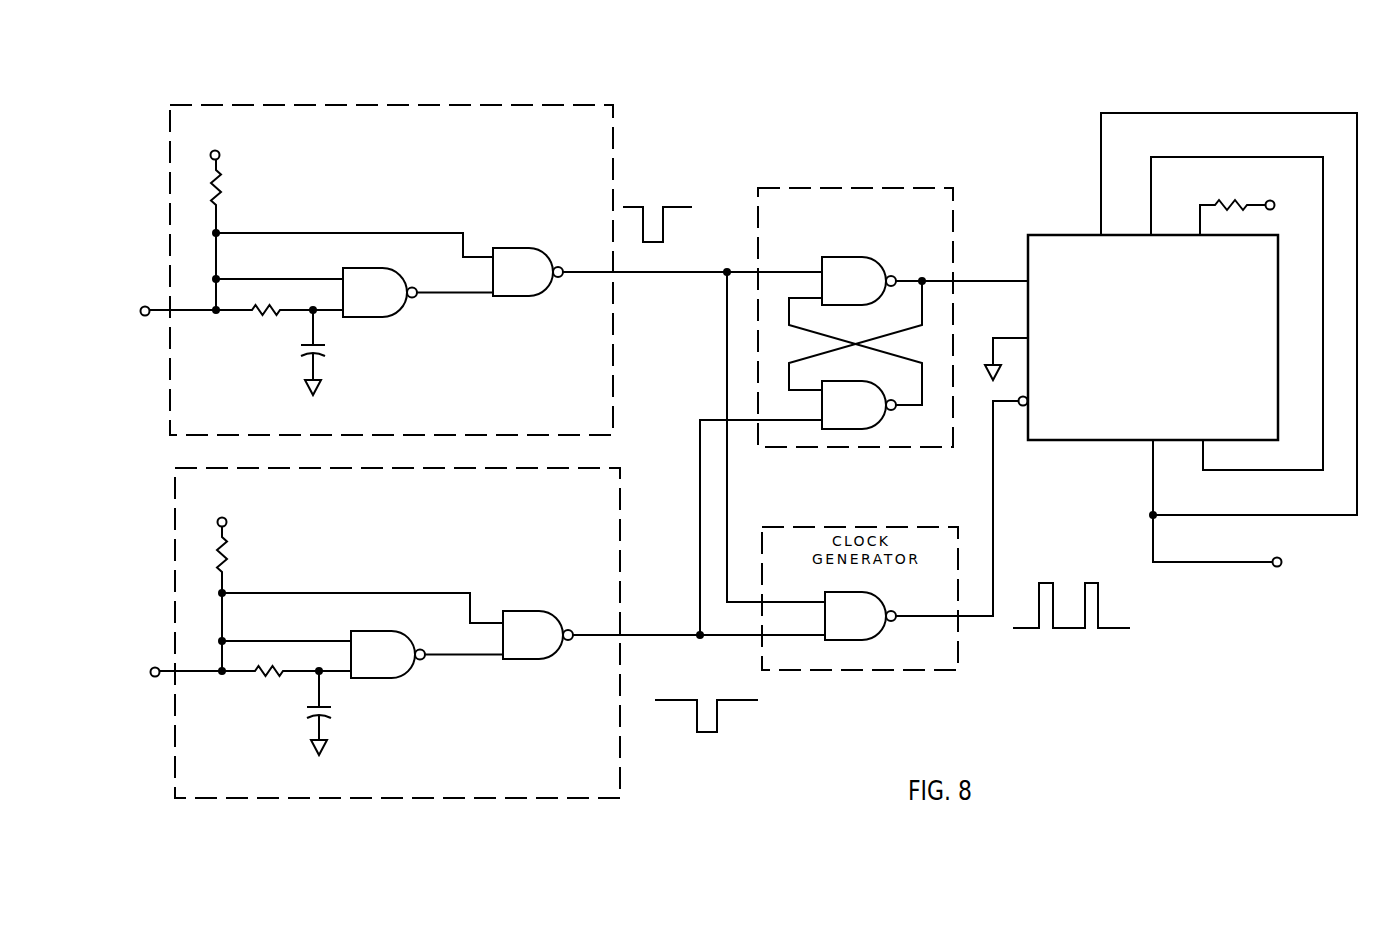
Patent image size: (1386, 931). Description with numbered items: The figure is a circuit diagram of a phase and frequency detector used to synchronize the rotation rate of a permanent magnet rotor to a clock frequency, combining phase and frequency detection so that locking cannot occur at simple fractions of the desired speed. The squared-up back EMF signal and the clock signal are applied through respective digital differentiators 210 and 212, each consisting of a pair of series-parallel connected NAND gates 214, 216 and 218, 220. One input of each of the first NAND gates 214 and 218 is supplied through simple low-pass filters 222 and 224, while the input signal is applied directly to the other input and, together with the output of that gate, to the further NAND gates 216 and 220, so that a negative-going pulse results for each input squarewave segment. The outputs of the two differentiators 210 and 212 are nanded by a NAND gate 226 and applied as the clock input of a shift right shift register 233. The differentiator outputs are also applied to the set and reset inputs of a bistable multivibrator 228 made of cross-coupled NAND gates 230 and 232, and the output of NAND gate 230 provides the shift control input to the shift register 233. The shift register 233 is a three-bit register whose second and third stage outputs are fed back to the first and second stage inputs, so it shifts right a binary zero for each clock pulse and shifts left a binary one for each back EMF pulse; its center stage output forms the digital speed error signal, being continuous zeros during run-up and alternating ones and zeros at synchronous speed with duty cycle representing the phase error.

The digital differentiator 210 is at (606, 497).
The digital differentiator 212 is at (596, 131).
The first NAND gate 214 is at (380, 678).
The further NAND gate 216 is at (530, 612).
The first NAND gate 218 is at (372, 317).
The further NAND gate 220 is at (521, 249).
The low-pass filter 222 is at (252, 782).
The low-pass filter 224 is at (237, 417).
The NAND gate 226 is at (870, 593).
The bistable multivibrator 228 is at (945, 208).
The NAND gate 230 is at (866, 259).
The NAND gate 232 is at (868, 428).
The shift right shift register 233 is at (1070, 441).